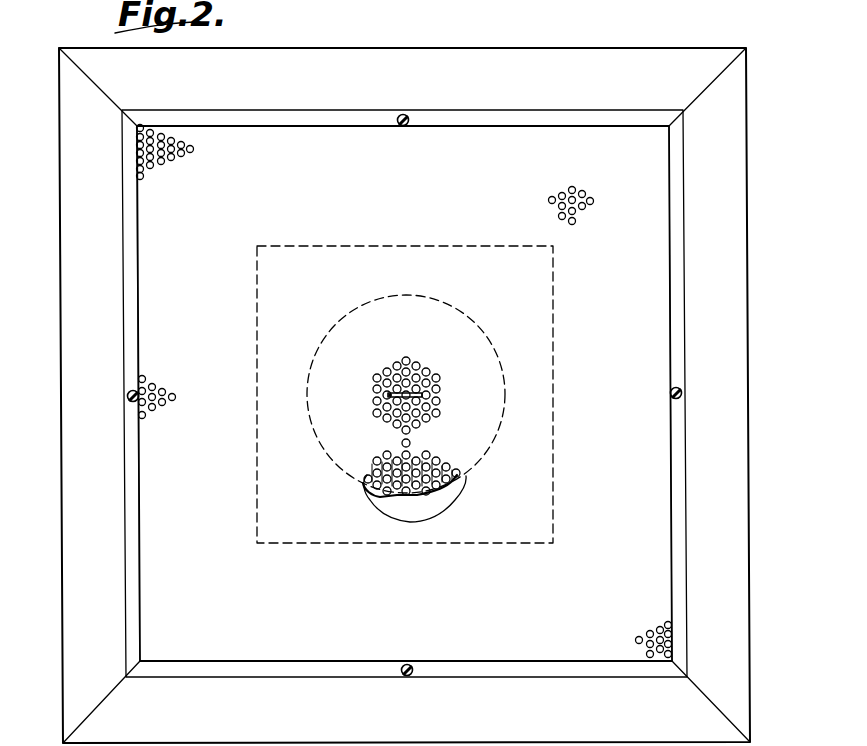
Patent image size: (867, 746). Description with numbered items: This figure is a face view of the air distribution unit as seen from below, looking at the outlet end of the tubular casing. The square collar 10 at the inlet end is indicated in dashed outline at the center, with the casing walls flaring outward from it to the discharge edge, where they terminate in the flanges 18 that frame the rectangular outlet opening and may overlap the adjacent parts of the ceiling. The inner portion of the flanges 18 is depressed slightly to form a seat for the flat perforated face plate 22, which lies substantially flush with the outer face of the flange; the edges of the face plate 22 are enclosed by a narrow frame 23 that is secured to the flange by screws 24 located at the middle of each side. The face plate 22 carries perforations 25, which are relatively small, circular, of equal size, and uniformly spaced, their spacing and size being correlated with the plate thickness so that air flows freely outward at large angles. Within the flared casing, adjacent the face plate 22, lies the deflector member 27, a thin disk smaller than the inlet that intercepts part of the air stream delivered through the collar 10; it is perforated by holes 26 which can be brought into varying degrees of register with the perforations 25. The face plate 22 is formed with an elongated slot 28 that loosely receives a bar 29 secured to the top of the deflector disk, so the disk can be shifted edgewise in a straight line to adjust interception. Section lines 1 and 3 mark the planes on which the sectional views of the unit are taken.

The collar 10 is at (557, 421).
The flanges 18 is at (558, 62).
The perforated face plate 22 is at (162, 133).
The frame 23 is at (243, 88).
The screws 24 is at (407, 114).
The perforations 25 is at (158, 165).
The holes 26 is at (415, 497).
The deflector member 27 is at (442, 490).
The elongated slot 28 is at (430, 396).
The bar 29 is at (392, 390).
The section line 1- 1 is at (46, 397).
The section line 3- 3 is at (408, 622).